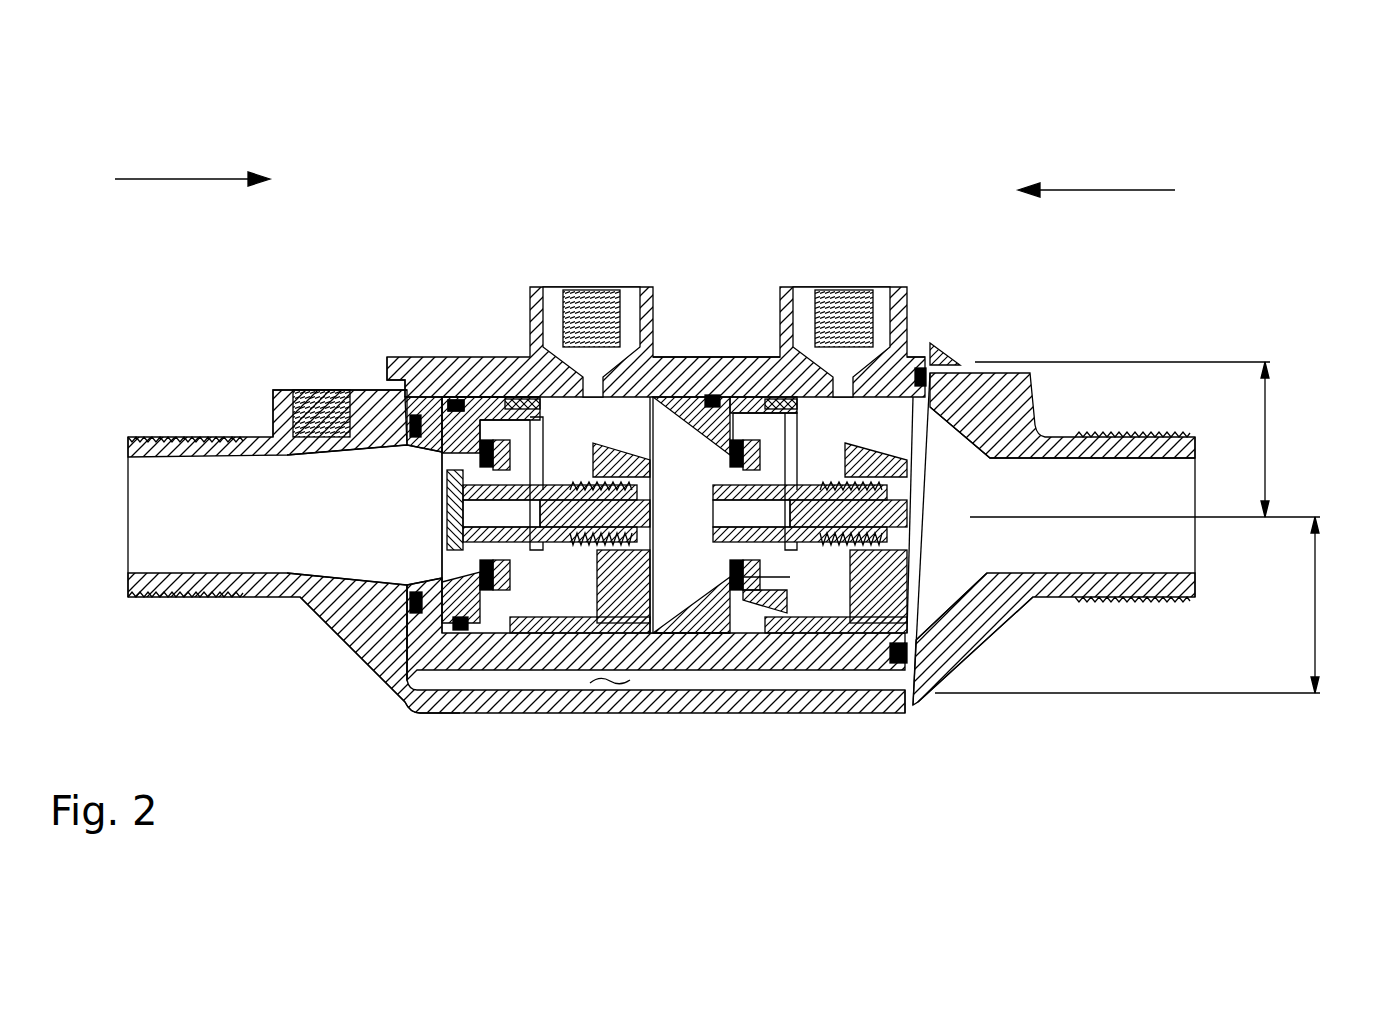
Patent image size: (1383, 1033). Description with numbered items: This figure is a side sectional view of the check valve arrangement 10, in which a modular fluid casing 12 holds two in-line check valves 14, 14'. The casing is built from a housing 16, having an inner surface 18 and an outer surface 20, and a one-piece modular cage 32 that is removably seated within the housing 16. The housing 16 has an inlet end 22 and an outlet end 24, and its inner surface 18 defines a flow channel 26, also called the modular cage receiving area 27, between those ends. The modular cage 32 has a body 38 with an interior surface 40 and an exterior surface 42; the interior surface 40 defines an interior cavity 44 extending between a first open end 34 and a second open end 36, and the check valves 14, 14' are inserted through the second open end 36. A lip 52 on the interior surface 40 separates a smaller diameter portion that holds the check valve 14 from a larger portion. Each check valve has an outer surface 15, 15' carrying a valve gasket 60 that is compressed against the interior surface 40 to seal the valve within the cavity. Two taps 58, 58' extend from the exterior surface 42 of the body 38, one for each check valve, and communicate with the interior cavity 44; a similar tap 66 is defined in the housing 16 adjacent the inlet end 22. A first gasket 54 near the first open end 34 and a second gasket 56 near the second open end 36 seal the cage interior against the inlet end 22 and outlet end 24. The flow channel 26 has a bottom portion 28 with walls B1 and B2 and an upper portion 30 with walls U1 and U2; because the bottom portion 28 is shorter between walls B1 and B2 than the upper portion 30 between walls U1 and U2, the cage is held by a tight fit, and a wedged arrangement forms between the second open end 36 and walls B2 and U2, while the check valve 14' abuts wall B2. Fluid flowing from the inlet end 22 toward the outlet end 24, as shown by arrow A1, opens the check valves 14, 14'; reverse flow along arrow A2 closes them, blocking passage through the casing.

The check valve arrangement 10 is at (800, 185).
The modular fluid casing 12 is at (303, 315).
The check valve 14 is at (546, 580).
The check valve 14' is at (819, 580).
The outer surface 15 is at (556, 597).
The outer surface 15' is at (810, 593).
The housing 16 is at (395, 665).
The inner surface 18 is at (680, 678).
The outer surface 20 is at (413, 700).
The inlet end 22 is at (128, 440).
The outlet end 24 is at (1195, 437).
The flow channel 26 is at (950, 478).
The modular cage receiving area 27 is at (600, 690).
The bottom portion 28 is at (1158, 605).
The upper portion 30 is at (1148, 439).
The modular cage 32 is at (402, 357).
The first open end 34 is at (370, 633).
The second open end 36 is at (898, 695).
The body 38 is at (706, 357).
The interior surface 40 is at (728, 595).
The exterior surface 42 is at (770, 610).
The interior cavity 44 is at (700, 486).
The lip 52 is at (660, 397).
The first gasket 54 is at (408, 418).
The second gasket 56 is at (950, 350).
The tap 58 is at (582, 311).
The tap 58' is at (837, 314).
The valve gasket 60 is at (456, 400).
The tap 66 is at (293, 390).
The arrow A1 is at (205, 179).
The arrow A2 is at (1133, 190).
The wall U1 is at (445, 397).
The wall U2 is at (920, 366).
The wall B1 is at (437, 640).
The wall B2 is at (858, 700).